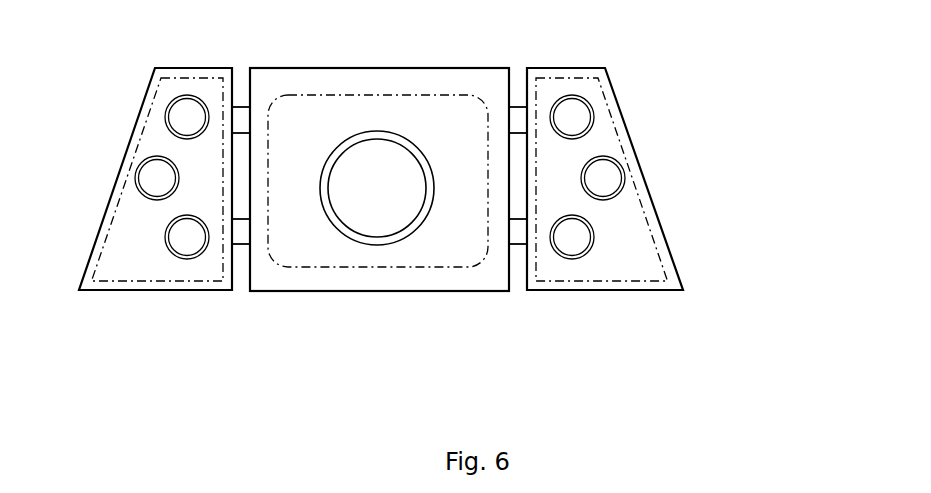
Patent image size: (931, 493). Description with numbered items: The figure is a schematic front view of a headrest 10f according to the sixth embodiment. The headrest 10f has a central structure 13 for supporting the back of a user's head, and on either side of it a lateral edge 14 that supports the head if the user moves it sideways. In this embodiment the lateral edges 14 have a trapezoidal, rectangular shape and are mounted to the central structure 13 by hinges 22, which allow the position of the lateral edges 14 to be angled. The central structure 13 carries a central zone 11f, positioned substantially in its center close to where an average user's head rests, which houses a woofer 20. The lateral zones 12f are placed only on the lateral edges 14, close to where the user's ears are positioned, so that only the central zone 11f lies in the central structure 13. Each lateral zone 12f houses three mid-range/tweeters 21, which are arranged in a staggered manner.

The headrest 10f is at (110, 356).
The central zone 11f is at (423, 268).
The lateral zone 12f is at (141, 221).
The central structure 13 is at (379, 235).
The lateral edges 14 is at (623, 123).
The woofer 20 is at (383, 208).
The mid-range/tweeter 21 is at (134, 175).
The hinges 22 is at (242, 115).